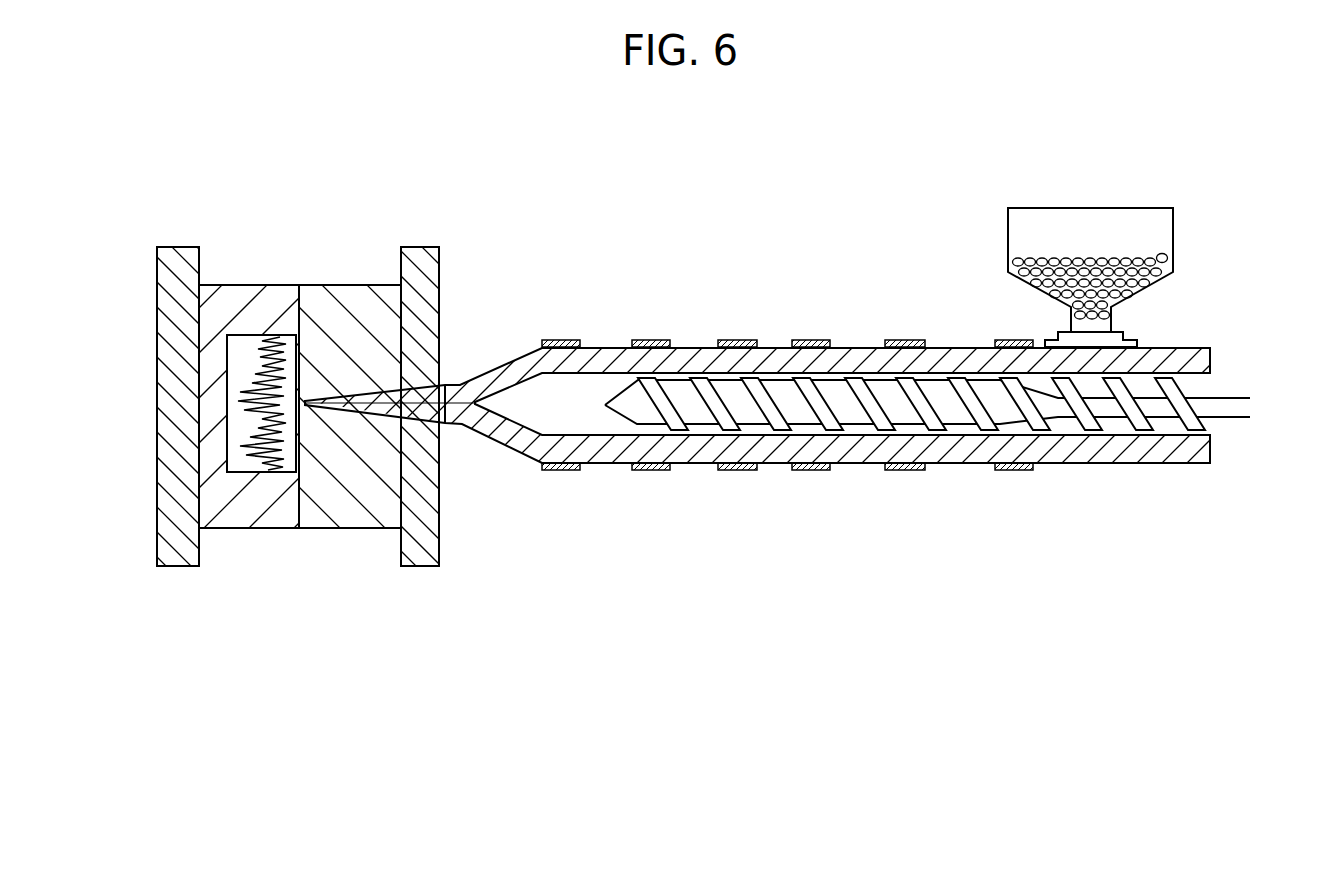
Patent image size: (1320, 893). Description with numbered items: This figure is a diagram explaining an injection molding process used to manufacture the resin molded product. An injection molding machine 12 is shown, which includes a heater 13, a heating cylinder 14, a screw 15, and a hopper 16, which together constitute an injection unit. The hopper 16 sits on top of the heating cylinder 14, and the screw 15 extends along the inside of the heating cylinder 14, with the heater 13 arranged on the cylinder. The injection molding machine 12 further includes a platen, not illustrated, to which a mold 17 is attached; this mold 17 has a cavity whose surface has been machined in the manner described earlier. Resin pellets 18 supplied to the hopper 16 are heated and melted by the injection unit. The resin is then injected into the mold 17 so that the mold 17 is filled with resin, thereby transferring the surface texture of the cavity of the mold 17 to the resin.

The injection molding machine 12 is at (685, 262).
The heater 13 is at (555, 470).
The heating cylinder 14 is at (1015, 462).
The screw 15 is at (695, 418).
The hopper 16 is at (1101, 262).
The mold 17 is at (355, 305).
The resin pellets 18 is at (1062, 262).